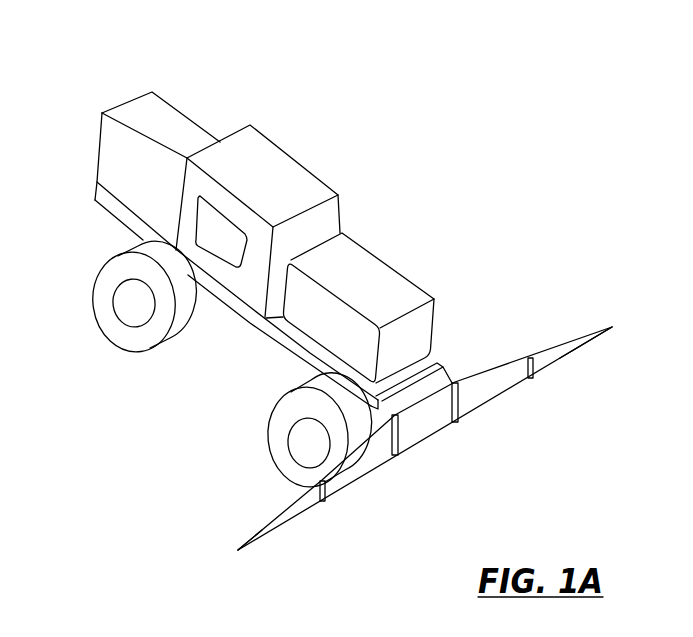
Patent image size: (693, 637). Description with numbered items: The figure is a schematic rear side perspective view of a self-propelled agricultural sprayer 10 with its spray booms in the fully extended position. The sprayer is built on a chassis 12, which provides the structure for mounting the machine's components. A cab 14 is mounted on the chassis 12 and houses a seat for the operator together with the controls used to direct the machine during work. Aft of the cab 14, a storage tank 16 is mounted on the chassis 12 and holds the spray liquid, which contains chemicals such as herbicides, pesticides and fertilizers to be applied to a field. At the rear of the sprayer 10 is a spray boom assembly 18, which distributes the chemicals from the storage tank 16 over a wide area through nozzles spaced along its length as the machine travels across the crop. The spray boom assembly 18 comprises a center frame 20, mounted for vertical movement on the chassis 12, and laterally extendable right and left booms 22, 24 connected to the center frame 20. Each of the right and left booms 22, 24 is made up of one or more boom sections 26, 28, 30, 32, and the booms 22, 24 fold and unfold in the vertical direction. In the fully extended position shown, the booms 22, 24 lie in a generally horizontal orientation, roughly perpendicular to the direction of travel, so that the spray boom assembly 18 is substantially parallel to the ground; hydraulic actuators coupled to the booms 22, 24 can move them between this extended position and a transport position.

The agricultural sprayer 10 is at (353, 137).
The chassis 12 is at (245, 323).
The cab 14 is at (282, 152).
The storage tank 16 is at (372, 252).
The spray boom assembly 18 is at (467, 342).
The center frame 20 is at (441, 427).
The right boom 22 is at (543, 330).
The left boom 24 is at (253, 490).
The boom section 26 is at (502, 393).
The boom section 28 is at (377, 467).
The boom section 30 is at (572, 353).
The boom section 32 is at (292, 520).